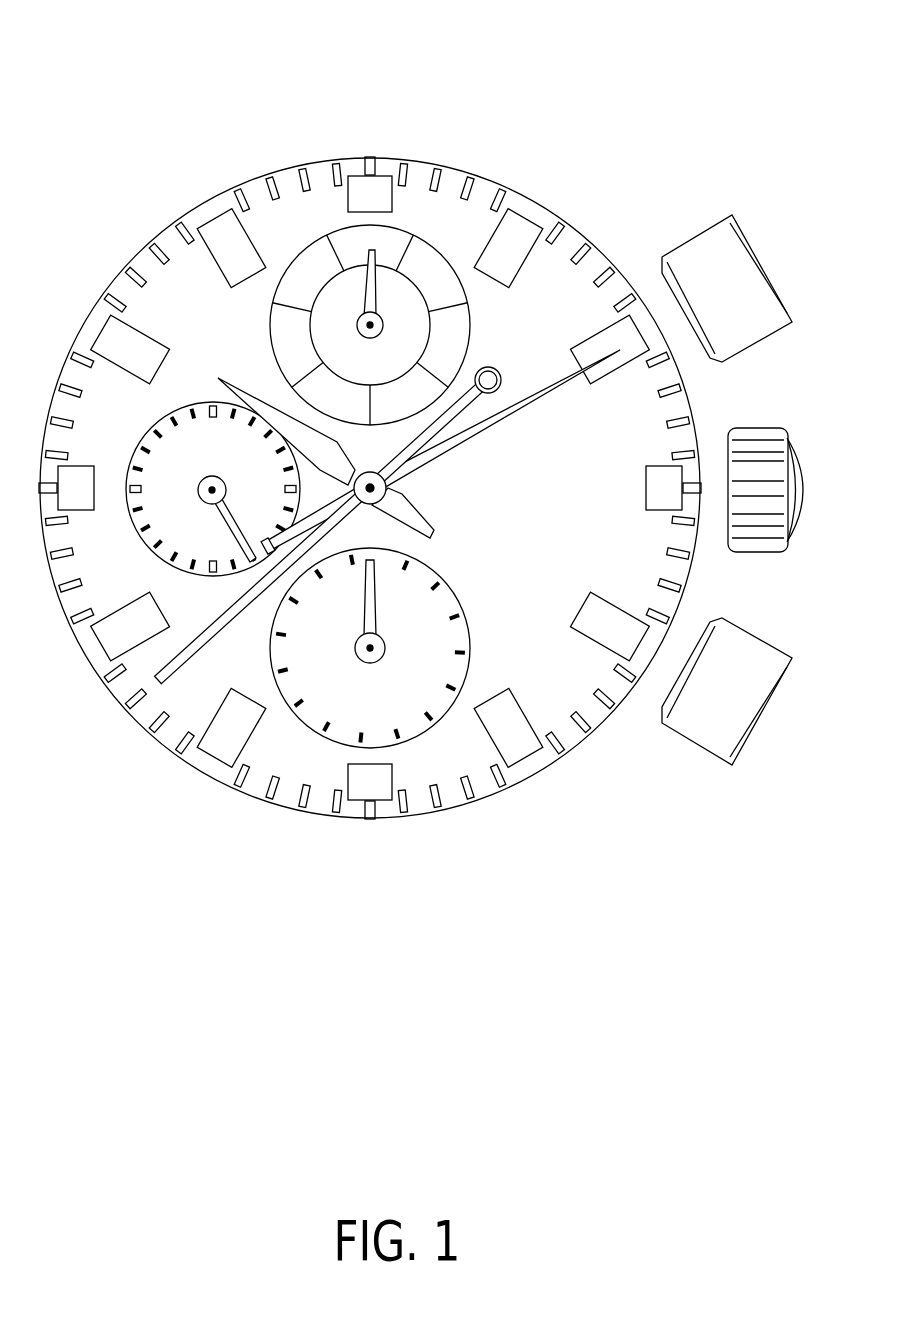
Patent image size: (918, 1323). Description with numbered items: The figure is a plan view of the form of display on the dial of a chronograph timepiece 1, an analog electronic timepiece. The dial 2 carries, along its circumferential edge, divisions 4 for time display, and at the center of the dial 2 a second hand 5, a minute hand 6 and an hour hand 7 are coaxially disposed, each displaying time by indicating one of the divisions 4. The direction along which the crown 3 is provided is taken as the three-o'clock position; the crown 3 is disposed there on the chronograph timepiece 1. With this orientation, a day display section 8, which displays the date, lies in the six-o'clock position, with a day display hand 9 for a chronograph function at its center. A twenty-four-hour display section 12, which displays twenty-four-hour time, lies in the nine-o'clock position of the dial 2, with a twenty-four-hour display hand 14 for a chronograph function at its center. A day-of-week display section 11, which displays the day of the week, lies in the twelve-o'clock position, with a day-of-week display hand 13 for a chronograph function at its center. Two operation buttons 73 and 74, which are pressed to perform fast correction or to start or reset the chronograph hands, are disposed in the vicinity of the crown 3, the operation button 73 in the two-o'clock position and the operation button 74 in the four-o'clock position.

The chronograph timepiece 1 is at (734, 72).
The dial 2 is at (449, 207).
The crown 3 is at (770, 428).
The divisions 4 is at (230, 225).
The second hand 5 is at (192, 652).
The minute hand 6 is at (515, 407).
The hour hand 7 is at (243, 391).
The day display section 8 is at (440, 628).
The day display hand 9 is at (371, 596).
The day-of-week display section 11 is at (465, 308).
The 24-hour display section 12 is at (183, 410).
The day-of-week display hand 13 is at (362, 282).
The 24-hour display hand 14 is at (227, 527).
The operation button 73 is at (730, 218).
The operation button 74 is at (770, 643).